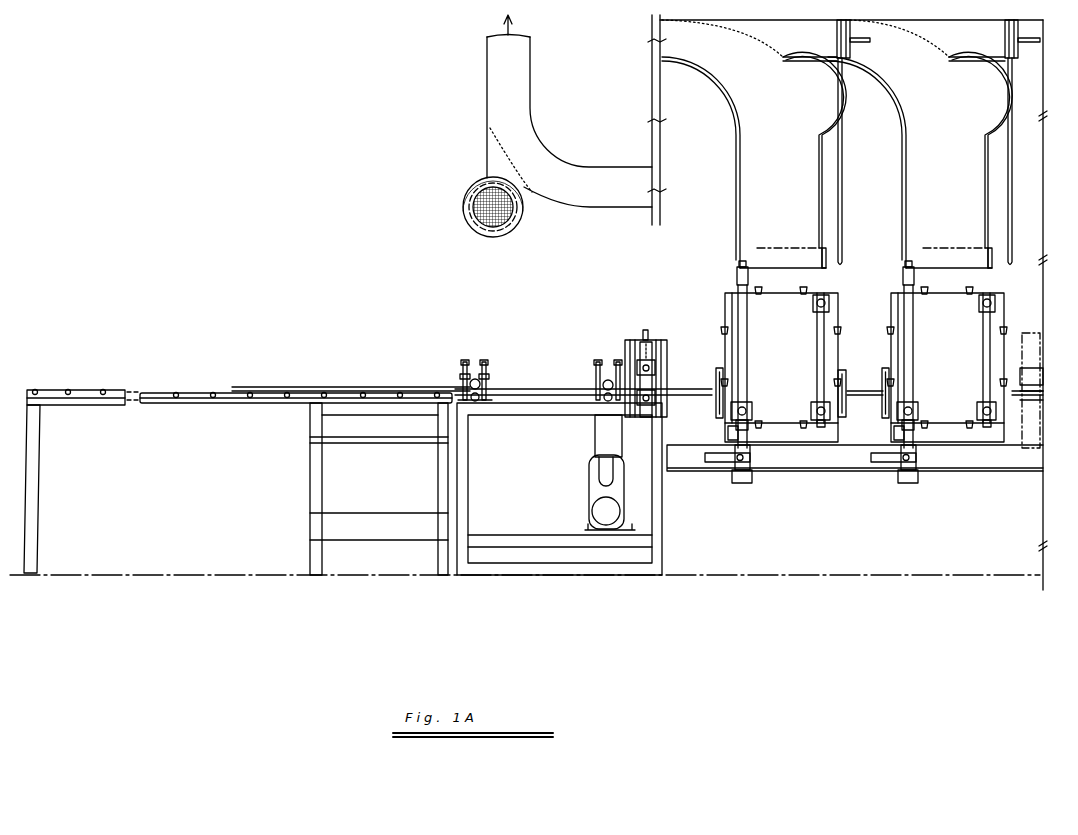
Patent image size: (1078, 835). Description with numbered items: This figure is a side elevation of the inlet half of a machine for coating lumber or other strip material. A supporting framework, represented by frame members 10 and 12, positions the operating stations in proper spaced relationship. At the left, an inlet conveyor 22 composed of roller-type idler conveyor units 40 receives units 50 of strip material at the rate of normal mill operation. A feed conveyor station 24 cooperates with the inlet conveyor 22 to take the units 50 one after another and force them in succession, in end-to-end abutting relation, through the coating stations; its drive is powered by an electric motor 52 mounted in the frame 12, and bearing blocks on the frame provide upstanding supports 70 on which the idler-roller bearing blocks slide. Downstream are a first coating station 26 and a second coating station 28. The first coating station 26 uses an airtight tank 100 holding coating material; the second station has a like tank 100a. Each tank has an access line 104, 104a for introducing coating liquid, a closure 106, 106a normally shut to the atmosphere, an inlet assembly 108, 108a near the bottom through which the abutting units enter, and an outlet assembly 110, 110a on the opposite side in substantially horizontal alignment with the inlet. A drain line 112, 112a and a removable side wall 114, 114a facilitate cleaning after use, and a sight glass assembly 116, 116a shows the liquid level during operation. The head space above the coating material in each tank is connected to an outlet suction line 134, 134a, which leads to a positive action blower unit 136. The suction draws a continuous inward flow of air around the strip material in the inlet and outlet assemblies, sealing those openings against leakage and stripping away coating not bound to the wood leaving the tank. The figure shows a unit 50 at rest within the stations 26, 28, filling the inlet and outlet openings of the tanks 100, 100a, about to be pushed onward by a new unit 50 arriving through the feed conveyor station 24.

The frame member 10 is at (37, 497).
The frame member 12 is at (466, 472).
The inlet conveyor 22 is at (90, 389).
The feed conveyor station 24 is at (611, 348).
The first coating station 26 is at (767, 373).
The second coating station 28 is at (965, 372).
The idler conveyor units 40 is at (215, 392).
The unit of strip material 50 is at (373, 389).
The electric motor 52 is at (594, 506).
The upstanding supports 70 is at (486, 360).
The airtight tank 100 is at (714, 344).
The coating tank 100a is at (880, 344).
The access line 104 is at (747, 320).
The access line 104a is at (913, 323).
The closure 106 is at (740, 266).
The closure 106a is at (906, 266).
The inlet assembly 108 is at (712, 407).
The inlet assembly 108a is at (879, 403).
The outlet assembly 110 is at (846, 408).
The outlet assembly 110a is at (1040, 408).
The drain line 112 is at (752, 478).
The drain line 112a is at (918, 478).
The removable side wall 114 is at (790, 381).
The removable side wall 114a is at (960, 385).
The sight glass assembly 116 is at (816, 338).
The sight glass assembly 116a is at (983, 340).
The outlet suction line 134 is at (746, 143).
The outlet suction line 134a is at (914, 143).
The positive action blower unit 136 is at (484, 238).